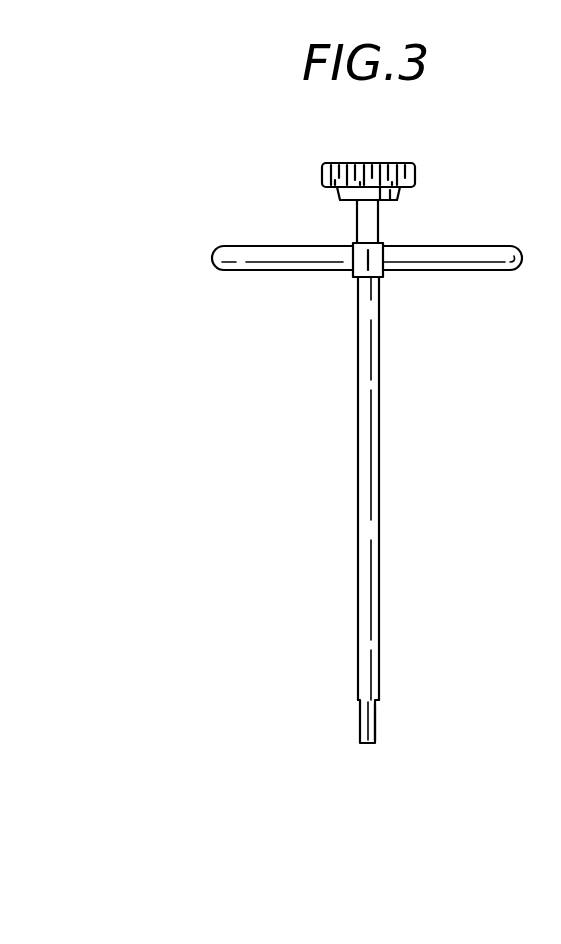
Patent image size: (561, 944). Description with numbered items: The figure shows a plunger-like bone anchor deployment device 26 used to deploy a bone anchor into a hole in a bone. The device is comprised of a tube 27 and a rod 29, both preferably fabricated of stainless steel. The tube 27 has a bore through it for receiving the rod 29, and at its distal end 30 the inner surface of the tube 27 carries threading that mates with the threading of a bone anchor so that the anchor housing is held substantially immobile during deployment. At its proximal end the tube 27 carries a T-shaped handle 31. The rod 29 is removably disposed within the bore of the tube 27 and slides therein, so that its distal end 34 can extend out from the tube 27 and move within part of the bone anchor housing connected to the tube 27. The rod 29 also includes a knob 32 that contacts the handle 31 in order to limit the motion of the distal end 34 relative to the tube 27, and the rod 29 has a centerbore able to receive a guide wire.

The bone anchor deployment device 26 is at (313, 588).
The tube 27 is at (357, 457).
The rod 29 is at (375, 728).
The distal end 30 is at (358, 702).
The T-shaped handle 31 is at (260, 271).
The knob 32 is at (340, 195).
The distal end 34 is at (368, 745).